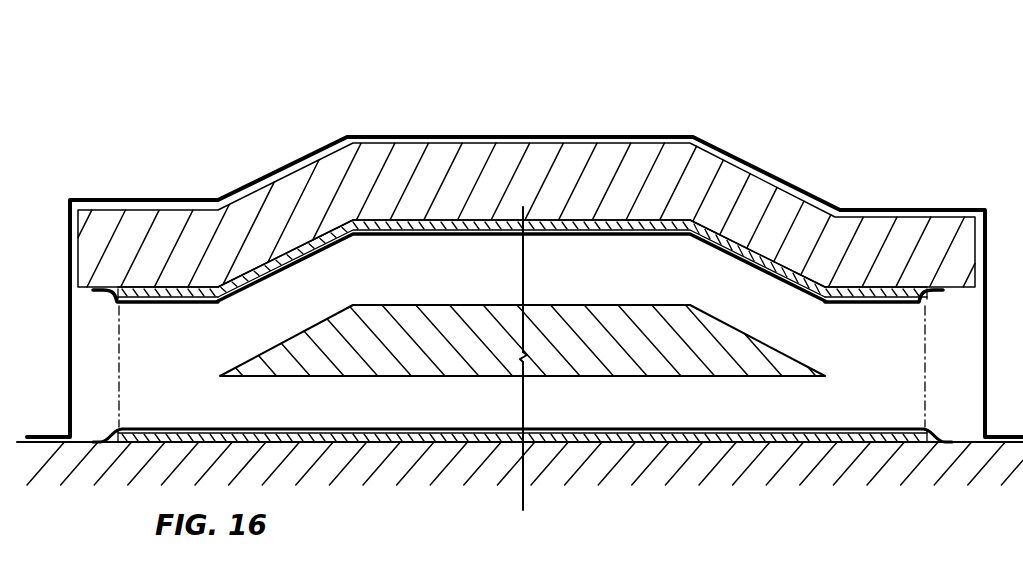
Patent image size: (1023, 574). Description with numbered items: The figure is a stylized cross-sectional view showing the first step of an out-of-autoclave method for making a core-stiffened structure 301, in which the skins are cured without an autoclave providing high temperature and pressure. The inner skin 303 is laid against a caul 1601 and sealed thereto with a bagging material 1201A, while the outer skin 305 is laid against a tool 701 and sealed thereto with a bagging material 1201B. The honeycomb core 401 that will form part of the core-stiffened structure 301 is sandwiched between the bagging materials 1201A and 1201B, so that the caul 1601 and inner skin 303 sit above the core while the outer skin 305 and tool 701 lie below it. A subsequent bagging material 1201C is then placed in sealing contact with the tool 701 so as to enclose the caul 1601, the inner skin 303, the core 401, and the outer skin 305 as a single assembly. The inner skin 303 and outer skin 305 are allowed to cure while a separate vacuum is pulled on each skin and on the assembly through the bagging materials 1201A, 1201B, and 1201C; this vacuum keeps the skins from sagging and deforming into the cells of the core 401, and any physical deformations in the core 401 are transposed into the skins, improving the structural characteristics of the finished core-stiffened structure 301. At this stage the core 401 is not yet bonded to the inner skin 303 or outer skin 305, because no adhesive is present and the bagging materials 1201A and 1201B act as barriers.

The core-stiffened structure 301 is at (910, 112).
The inner skin 303 is at (392, 222).
The outer skin 305 is at (808, 436).
The honeycomb core 401 is at (473, 356).
The tool 701 is at (900, 478).
The bagging material 1201A is at (200, 305).
The bagging material 1201B is at (213, 430).
The bagging material 1201C is at (300, 164).
The caul 1601 is at (582, 149).